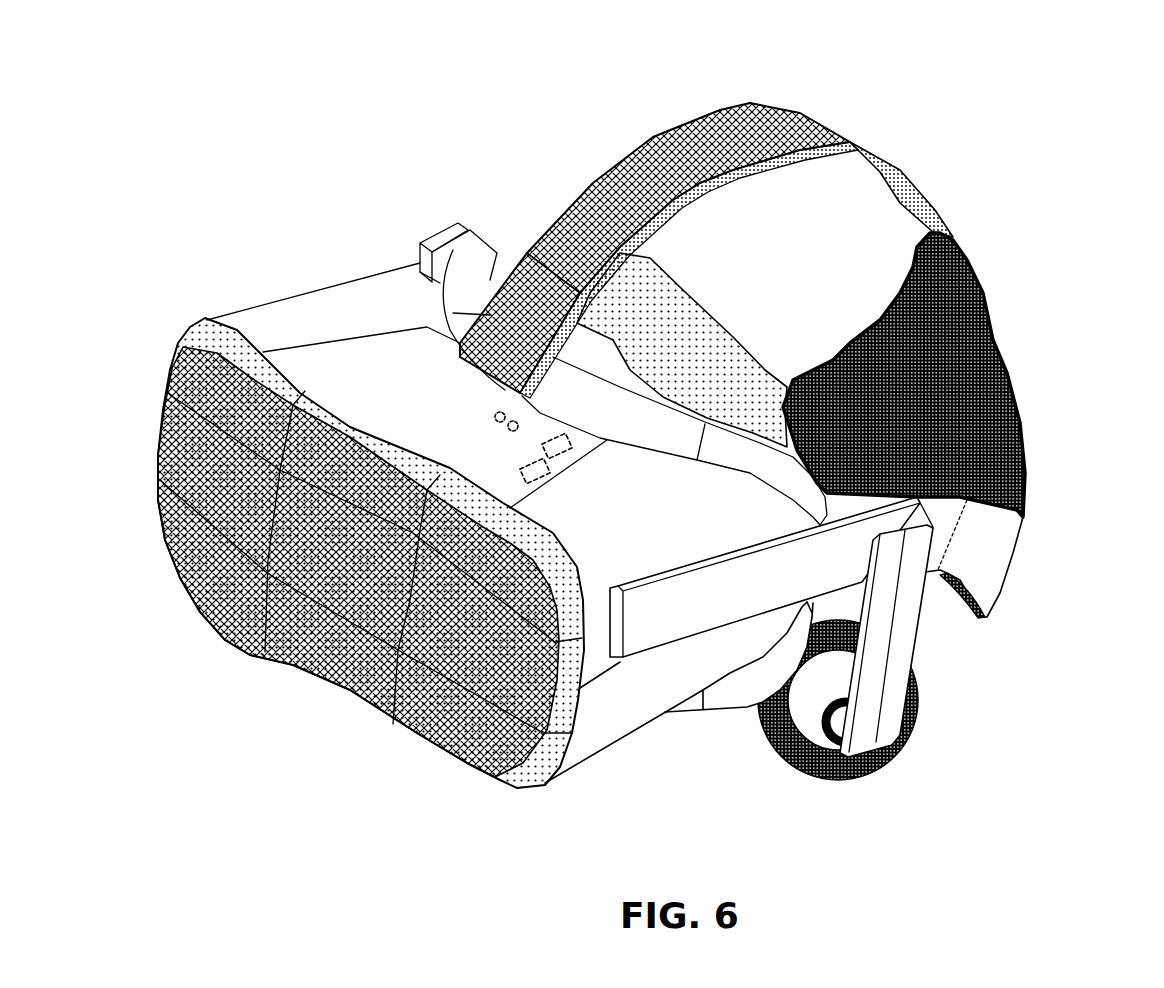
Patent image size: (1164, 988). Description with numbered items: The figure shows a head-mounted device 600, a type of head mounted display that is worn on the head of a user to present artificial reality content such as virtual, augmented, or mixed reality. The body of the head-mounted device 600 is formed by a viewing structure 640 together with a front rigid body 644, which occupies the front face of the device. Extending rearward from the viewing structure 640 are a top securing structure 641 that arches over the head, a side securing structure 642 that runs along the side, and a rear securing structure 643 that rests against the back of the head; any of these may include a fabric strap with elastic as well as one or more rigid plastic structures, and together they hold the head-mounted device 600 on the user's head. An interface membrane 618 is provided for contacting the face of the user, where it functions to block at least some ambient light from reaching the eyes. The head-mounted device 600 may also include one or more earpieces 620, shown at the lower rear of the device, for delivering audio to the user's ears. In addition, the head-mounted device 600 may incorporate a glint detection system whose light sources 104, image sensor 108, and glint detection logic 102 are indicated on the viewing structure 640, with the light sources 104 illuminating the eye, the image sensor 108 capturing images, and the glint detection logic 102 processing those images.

The head-mounted device 600 is at (1150, 33).
The top securing structure 641 is at (810, 113).
The side securing structure 642 is at (700, 295).
The rear securing structure 643 is at (1003, 323).
The interface membrane 618 is at (500, 257).
The viewing structure 640 is at (395, 318).
The front rigid body 644 is at (360, 584).
The light sources 104 is at (500, 431).
The image sensor 108 is at (570, 445).
The glint detection logic 102 is at (547, 477).
The earpieces 620 is at (905, 744).